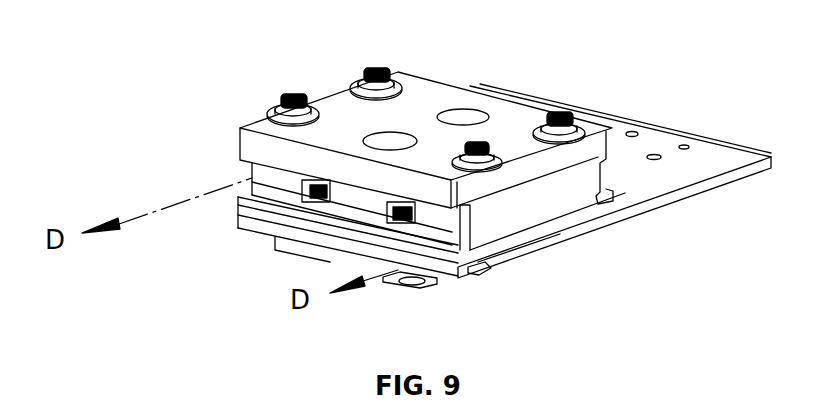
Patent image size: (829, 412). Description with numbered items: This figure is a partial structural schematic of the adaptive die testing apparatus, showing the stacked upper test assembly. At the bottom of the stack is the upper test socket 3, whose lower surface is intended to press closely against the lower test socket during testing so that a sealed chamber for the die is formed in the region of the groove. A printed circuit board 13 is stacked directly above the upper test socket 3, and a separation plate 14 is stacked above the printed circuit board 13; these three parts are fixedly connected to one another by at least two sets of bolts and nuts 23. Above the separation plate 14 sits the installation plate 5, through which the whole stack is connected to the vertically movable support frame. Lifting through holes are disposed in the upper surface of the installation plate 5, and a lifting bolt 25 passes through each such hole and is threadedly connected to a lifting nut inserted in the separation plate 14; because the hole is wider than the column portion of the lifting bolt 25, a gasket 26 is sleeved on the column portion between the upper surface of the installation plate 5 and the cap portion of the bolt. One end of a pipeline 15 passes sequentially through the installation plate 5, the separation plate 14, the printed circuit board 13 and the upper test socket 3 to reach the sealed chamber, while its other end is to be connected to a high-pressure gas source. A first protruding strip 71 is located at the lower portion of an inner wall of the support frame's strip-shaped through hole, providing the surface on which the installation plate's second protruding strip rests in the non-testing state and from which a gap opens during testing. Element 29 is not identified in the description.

The upper test socket 3 is at (307, 253).
The installation plate 5 is at (513, 120).
The printed circuit board 13 is at (652, 206).
The separation plate 14 is at (538, 222).
The pipeline 15 is at (465, 110).
The nut 23 is at (302, 190).
The lifting bolt 25 is at (388, 70).
The gasket 26 is at (487, 277).
The washer 29 is at (352, 78).
The first protruding strip 71 is at (602, 148).